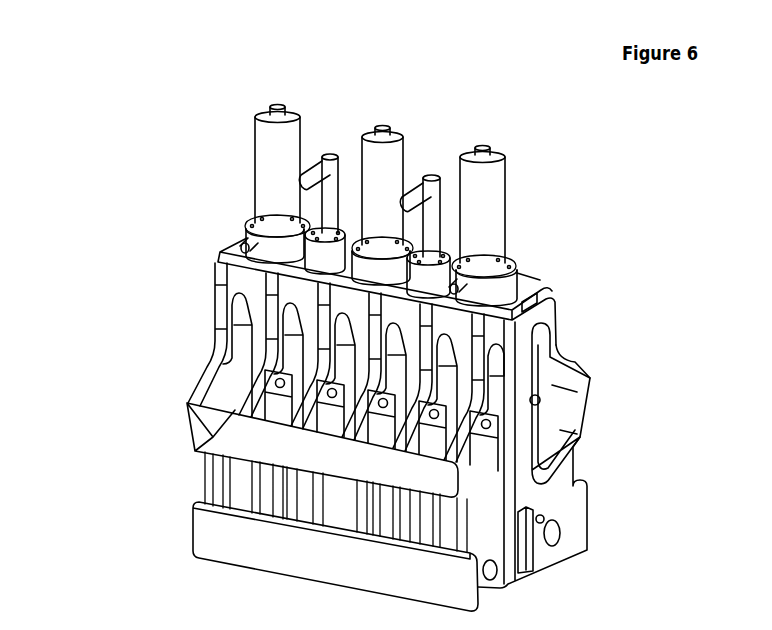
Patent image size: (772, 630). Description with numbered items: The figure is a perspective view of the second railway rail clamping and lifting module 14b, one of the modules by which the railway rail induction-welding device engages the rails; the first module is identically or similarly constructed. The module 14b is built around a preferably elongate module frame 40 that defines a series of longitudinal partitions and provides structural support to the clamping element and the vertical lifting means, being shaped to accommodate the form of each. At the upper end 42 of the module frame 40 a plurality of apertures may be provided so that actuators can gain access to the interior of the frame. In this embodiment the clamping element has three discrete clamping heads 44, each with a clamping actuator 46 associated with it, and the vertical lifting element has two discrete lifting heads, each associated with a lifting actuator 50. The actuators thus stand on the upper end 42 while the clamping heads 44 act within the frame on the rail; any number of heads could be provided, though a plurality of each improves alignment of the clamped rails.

The second railway rail clamping and lifting module 14b is at (137, 180).
The module frame 40 is at (188, 393).
The upper end 42 is at (529, 279).
The clamping heads 44 is at (541, 399).
The clamping actuator 46 is at (280, 100).
The lifting actuator 50 is at (330, 152).